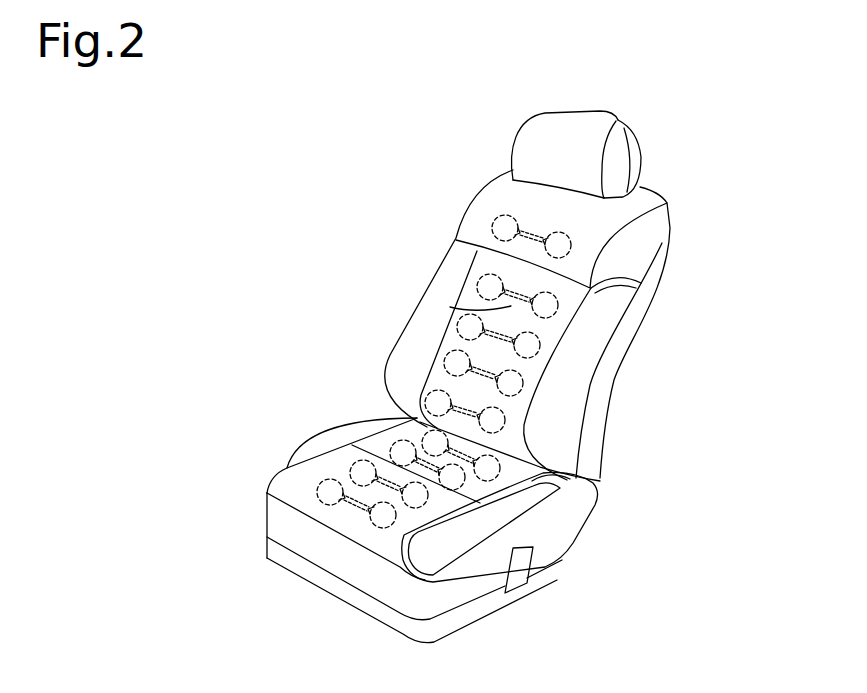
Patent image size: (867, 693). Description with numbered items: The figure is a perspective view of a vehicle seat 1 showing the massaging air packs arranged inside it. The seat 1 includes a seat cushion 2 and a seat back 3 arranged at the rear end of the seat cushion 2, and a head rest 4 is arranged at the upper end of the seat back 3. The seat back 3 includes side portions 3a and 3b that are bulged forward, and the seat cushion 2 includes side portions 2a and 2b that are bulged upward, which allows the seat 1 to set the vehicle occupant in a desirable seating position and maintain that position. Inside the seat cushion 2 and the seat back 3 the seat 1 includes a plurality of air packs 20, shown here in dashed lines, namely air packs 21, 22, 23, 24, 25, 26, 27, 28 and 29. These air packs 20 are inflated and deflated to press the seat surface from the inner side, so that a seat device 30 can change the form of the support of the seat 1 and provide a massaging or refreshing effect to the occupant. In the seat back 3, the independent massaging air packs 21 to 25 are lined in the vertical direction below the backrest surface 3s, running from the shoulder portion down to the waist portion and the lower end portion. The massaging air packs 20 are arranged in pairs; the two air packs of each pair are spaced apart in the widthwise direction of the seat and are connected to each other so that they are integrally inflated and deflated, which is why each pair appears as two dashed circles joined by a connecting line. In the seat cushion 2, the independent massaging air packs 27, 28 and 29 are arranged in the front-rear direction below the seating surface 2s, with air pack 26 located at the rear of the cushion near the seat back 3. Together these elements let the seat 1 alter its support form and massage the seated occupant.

The vehicle seat 1 is at (241, 142).
The seat device 30 is at (463, 404).
The seat cushion 2 is at (272, 478).
The side portion 2a is at (337, 430).
The side portion 2b is at (586, 528).
The seating surface 2s is at (343, 520).
The seat back 3 is at (670, 261).
The side portion 3a is at (448, 272).
The side portion 3b is at (613, 307).
The backrest surface 3s is at (450, 307).
The head rest 4 is at (643, 157).
The air packs 20 is at (463, 404).
The massaging air pack 21 is at (493, 227).
The massaging air pack 22 is at (558, 307).
The massaging air pack 23 is at (540, 345).
The massaging air pack 24 is at (523, 383).
The massaging air pack 25 is at (505, 422).
The air pack 26 is at (403, 440).
The massaging air pack 27 is at (495, 480).
The massaging air pack 28 is at (350, 470).
The massaging air pack 29 is at (396, 527).